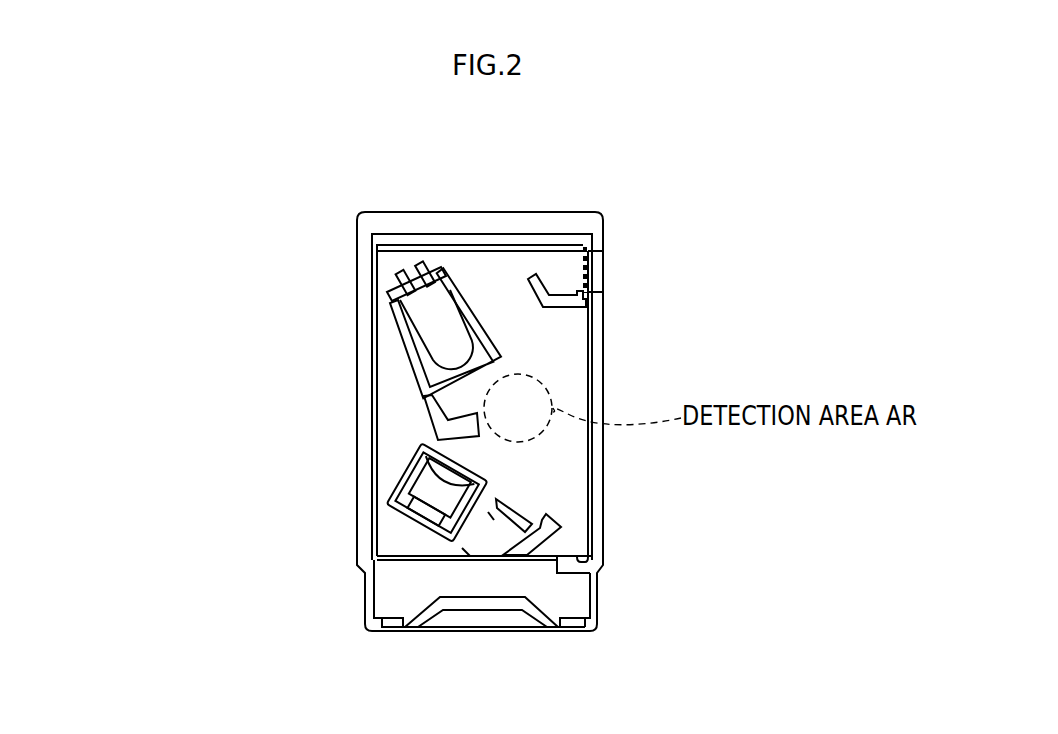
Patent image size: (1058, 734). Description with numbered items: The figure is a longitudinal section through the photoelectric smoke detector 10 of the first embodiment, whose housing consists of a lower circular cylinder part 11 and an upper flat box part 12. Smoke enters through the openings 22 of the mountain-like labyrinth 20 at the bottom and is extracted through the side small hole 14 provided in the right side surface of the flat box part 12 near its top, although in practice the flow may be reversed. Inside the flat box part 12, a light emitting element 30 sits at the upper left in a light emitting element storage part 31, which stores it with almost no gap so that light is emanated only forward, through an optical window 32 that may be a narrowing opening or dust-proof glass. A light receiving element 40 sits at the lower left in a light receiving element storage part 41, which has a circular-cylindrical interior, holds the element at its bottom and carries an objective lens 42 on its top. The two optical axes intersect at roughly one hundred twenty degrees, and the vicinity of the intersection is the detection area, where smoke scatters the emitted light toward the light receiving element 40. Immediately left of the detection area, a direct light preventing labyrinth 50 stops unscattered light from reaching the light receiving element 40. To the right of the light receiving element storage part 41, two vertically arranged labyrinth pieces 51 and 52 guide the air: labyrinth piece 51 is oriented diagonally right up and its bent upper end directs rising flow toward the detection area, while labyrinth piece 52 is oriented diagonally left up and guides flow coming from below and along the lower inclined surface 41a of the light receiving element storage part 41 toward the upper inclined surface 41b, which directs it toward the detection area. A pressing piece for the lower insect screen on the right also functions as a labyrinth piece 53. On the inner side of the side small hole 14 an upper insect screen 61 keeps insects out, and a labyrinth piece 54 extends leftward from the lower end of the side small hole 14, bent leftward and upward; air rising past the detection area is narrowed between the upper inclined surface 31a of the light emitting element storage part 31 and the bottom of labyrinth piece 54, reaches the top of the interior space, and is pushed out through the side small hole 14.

The smoke detector 10 is at (316, 141).
The circular cylinder part 11 is at (357, 566).
The flat box part 12 is at (357, 370).
The side small hole 14 is at (598, 278).
The mountain-like labyrinth 20 is at (458, 611).
The openings 22 is at (393, 623).
The light emitting element 30 is at (307, 265).
The light emitting element storage part 31 is at (408, 314).
The upper inclined surface 31a is at (476, 272).
The optical window 32 is at (483, 372).
The light receiving element 40 is at (396, 571).
The light receiving element storage part 41 is at (396, 450).
The lower inclined surface 41a is at (470, 556).
The upper inclined surface 41b is at (494, 520).
The objective lens 42 is at (452, 454).
The direct light preventing labyrinth 50 is at (447, 412).
The labyrinth piece 51 is at (560, 527).
The labyrinth piece 52 is at (503, 503).
The labyrinth piece 53 is at (581, 575).
The labyrinth piece 54 is at (560, 308).
The upper insect screen 61 is at (587, 246).